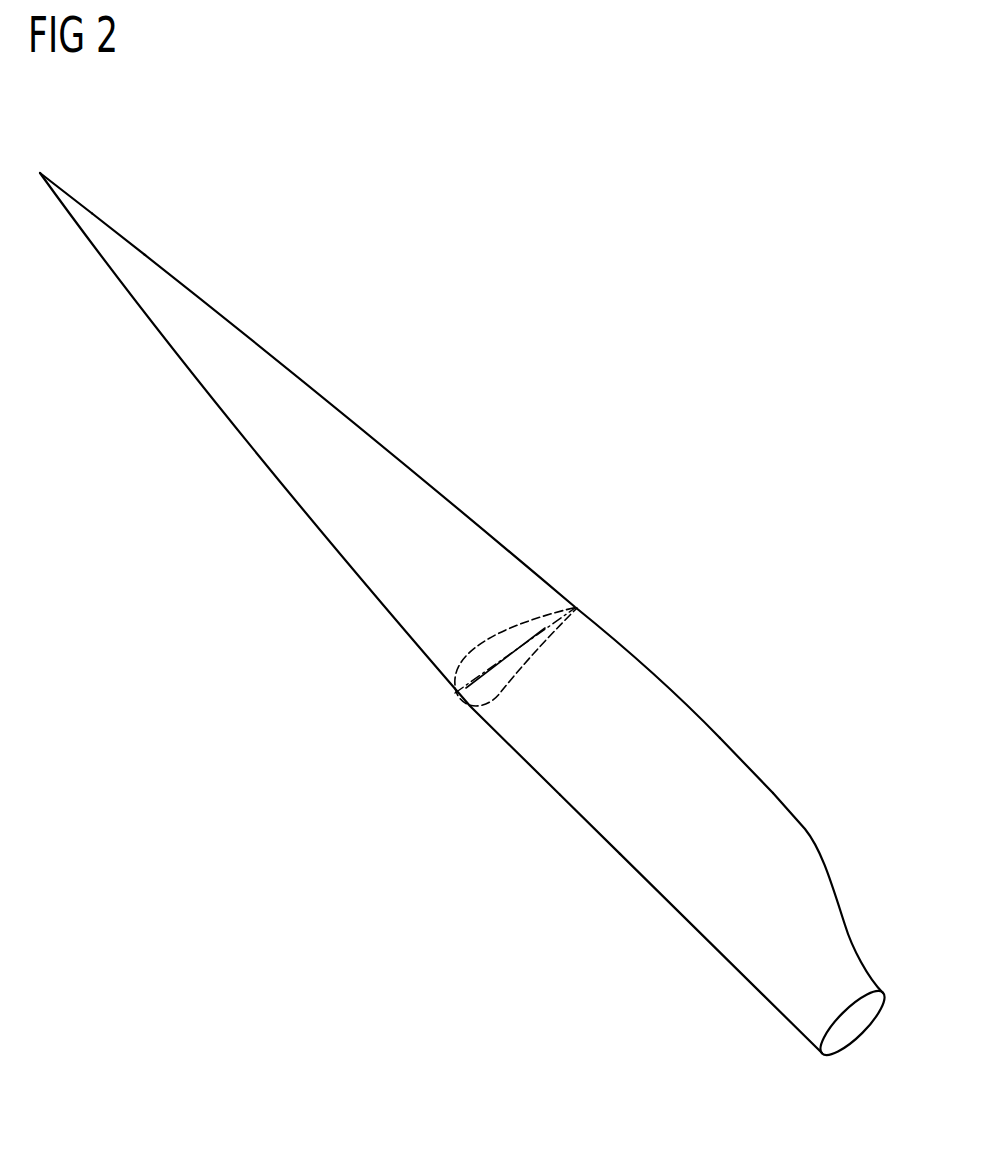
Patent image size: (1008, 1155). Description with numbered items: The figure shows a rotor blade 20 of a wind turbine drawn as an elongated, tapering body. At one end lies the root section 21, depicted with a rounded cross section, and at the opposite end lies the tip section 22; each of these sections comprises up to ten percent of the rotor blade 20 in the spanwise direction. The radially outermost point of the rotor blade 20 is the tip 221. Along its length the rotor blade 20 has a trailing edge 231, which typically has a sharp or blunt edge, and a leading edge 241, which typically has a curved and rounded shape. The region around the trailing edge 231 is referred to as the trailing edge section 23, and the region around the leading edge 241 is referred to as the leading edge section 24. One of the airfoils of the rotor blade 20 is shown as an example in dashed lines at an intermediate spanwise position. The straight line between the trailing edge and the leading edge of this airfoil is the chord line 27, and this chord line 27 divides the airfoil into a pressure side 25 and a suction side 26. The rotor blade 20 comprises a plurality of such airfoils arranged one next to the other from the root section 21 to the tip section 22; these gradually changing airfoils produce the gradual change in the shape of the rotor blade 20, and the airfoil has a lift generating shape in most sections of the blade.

The rotor blade 20 is at (632, 495).
The root section 21 is at (847, 977).
The tip section 22 is at (106, 232).
The tip 221 is at (40, 172).
The trailing edge section 23 is at (455, 545).
The trailing edge 231 is at (723, 737).
The leading edge section 24 is at (431, 613).
The leading edge 241 is at (580, 829).
The pressure side 25 is at (541, 646).
The suction side 26 is at (508, 628).
The chord line 27 is at (490, 683).